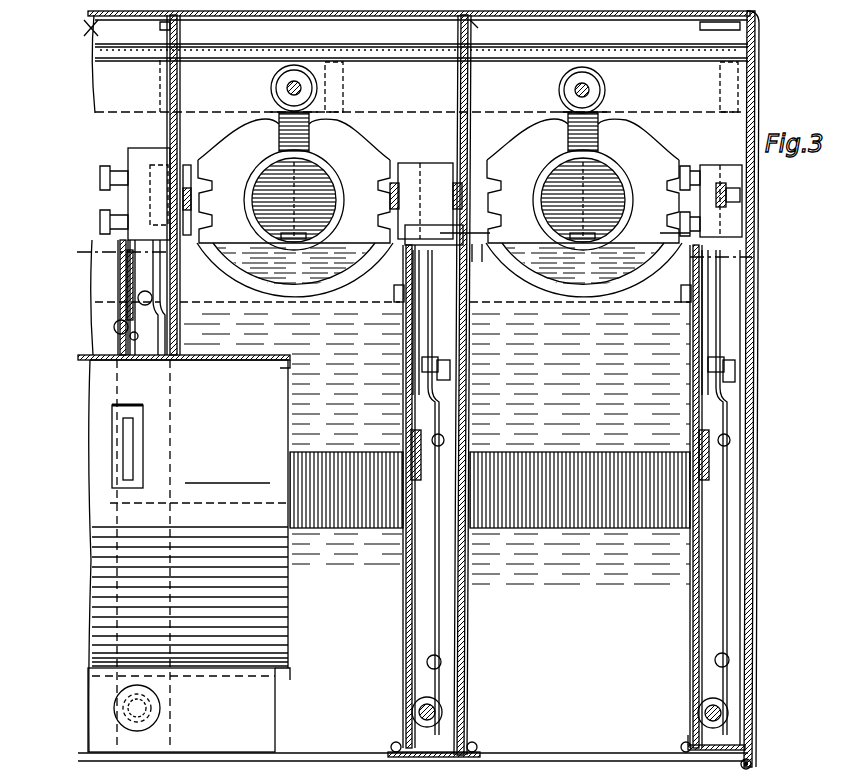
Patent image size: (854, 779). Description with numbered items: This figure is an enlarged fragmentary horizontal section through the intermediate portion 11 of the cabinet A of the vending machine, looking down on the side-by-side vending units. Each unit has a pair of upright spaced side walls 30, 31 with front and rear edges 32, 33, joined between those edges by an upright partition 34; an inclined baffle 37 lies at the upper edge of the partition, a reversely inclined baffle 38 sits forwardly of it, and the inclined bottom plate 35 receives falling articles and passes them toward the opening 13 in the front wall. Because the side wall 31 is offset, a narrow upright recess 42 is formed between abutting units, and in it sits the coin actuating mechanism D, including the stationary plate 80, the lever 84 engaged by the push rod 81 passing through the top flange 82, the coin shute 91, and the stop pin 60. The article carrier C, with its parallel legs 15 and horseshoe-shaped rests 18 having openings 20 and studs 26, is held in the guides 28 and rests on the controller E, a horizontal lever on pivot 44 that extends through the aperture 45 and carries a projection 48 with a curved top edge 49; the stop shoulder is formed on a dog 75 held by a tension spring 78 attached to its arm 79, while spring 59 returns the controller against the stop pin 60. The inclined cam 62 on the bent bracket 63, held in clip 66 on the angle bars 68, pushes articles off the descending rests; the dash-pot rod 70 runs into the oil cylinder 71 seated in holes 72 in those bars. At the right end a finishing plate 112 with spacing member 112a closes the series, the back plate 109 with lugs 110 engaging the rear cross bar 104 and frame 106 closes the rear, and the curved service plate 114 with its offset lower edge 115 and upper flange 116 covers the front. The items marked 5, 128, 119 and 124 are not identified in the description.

The intermediate portion 11 is at (424, 390).
The rear cross bar 104 is at (111, 81).
The horizontal angle bars 68 is at (427, 87).
The tension spring 59 is at (180, 36).
The horizontal frame 106 is at (280, 40).
The rear edge 33 is at (485, 24).
The back plate 109 is at (553, 22).
The offset downwardly extending lugs 110 is at (712, 25).
The cabinet or case A is at (760, 90).
The side wall 30 is at (205, 392).
The rod 70 is at (285, 88).
The vertical cylinder or tube 71 is at (280, 95).
The holes 72 is at (300, 70).
The clip or socket 66 is at (312, 117).
The bent bar or bracket 63 is at (320, 127).
The rest 18 is at (438, 144).
The guide 28 is at (205, 150).
The cam 62 is at (350, 175).
The central opening or aperture 20 is at (360, 195).
The supporting stud or projection 26 is at (350, 218).
The legs or side pieces 15 is at (486, 206).
The article carrier C is at (246, 156).
The tension spring 78 is at (410, 280).
The dog 75 is at (398, 252).
The arm or extension 79 is at (394, 283).
The aperture 45 is at (482, 252).
The inclined guide plate or baffle 37 is at (490, 427).
The upright partition or plate 34 is at (342, 305).
The bottom plate 35 is at (385, 530).
The second reversely inclined baffle 38 is at (467, 611).
The upwardly extending projection 48 is at (128, 152).
The top face or edge 49 is at (170, 150).
The pivot 44 is at (447, 216).
The controller member E is at (146, 146).
The section line 5 is at (77, 252).
The shelf 128 is at (100, 362).
The recess or pocket 42 is at (160, 357).
The flange 116 is at (276, 366).
The removable service plate or cover 114 is at (189, 552).
The side wall 31 is at (150, 490).
The horizontal top flange 82 is at (181, 710).
The push rod or plunger 81 is at (160, 706).
The lower edge 115 is at (300, 668).
The stop pin or abutment 60 is at (450, 368).
The coin shute 91 is at (412, 432).
The coin actuating mechanism D is at (437, 410).
The plate 80 is at (434, 592).
The lever 84 is at (440, 650).
The front edge 32 is at (394, 742).
The bottom plate 119 is at (440, 760).
The opening 13 is at (345, 755).
The finishing plate 112 is at (756, 592).
The spacing member 112a is at (742, 744).
The foot 124 is at (811, 770).